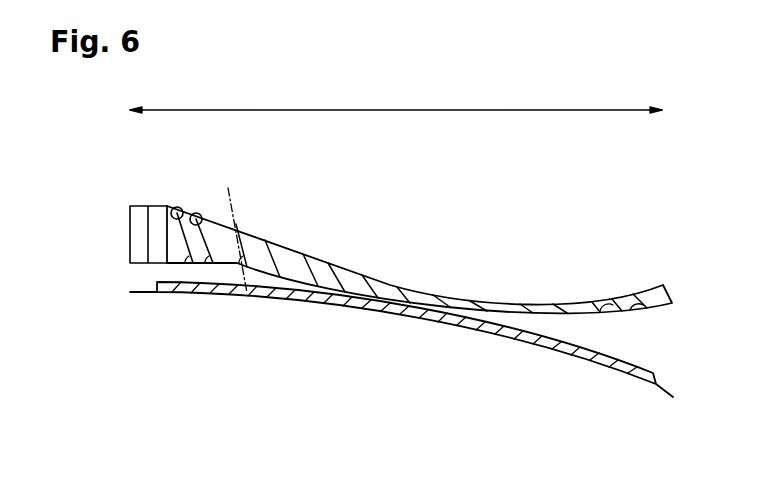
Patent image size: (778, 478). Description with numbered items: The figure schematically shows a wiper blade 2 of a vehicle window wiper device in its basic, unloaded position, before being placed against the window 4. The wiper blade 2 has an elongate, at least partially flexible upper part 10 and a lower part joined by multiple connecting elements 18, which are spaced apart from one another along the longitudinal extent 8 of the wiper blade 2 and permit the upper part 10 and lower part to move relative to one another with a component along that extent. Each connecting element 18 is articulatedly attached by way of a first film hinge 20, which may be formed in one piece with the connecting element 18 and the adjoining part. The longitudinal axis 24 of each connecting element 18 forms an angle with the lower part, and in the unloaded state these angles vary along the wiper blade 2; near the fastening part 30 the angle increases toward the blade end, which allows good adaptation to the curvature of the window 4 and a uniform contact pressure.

The wiper blade 2 is at (549, 230).
The window 4 is at (552, 370).
The longitudinal extent 8 is at (397, 108).
The upper part 10 is at (496, 301).
The connecting elements 18 is at (321, 269).
The first film hinge 20 is at (179, 207).
The longitudinal axis 24 is at (238, 217).
The fastening part 30 is at (135, 241).